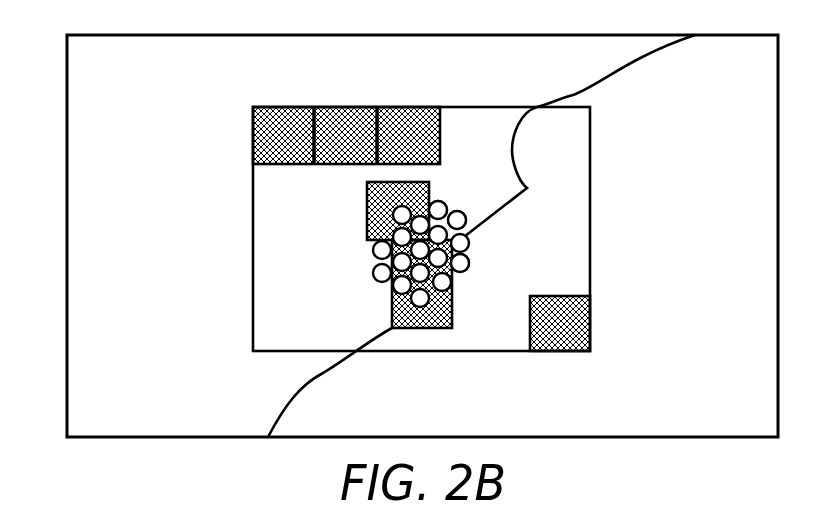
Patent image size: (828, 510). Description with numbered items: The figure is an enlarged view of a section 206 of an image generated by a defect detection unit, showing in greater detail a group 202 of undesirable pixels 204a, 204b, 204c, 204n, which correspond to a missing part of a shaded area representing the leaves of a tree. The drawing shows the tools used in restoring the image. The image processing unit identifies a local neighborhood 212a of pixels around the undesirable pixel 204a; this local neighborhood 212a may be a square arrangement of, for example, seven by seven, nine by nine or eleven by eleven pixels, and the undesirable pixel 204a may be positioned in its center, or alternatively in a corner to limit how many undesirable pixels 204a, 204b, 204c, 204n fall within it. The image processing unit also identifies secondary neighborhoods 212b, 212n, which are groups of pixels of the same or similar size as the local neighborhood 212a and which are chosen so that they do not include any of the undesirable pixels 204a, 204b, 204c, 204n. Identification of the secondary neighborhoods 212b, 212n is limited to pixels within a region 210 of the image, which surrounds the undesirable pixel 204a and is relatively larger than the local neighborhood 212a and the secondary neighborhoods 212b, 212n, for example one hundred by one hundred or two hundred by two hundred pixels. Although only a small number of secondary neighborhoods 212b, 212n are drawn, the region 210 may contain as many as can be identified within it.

The group of undesirable pixels 202 is at (350, 260).
The undesirable pixel 204a is at (450, 205).
The undesirable pixel 204b is at (465, 222).
The undesirable pixel 204c is at (440, 303).
The undesirable pixel 204n is at (469, 266).
The section 206 is at (150, 35).
The region 210 is at (590, 230).
The local neighborhood 212a is at (393, 182).
The secondary neighborhood 212b is at (290, 107).
The secondary neighborhood 212n is at (590, 316).